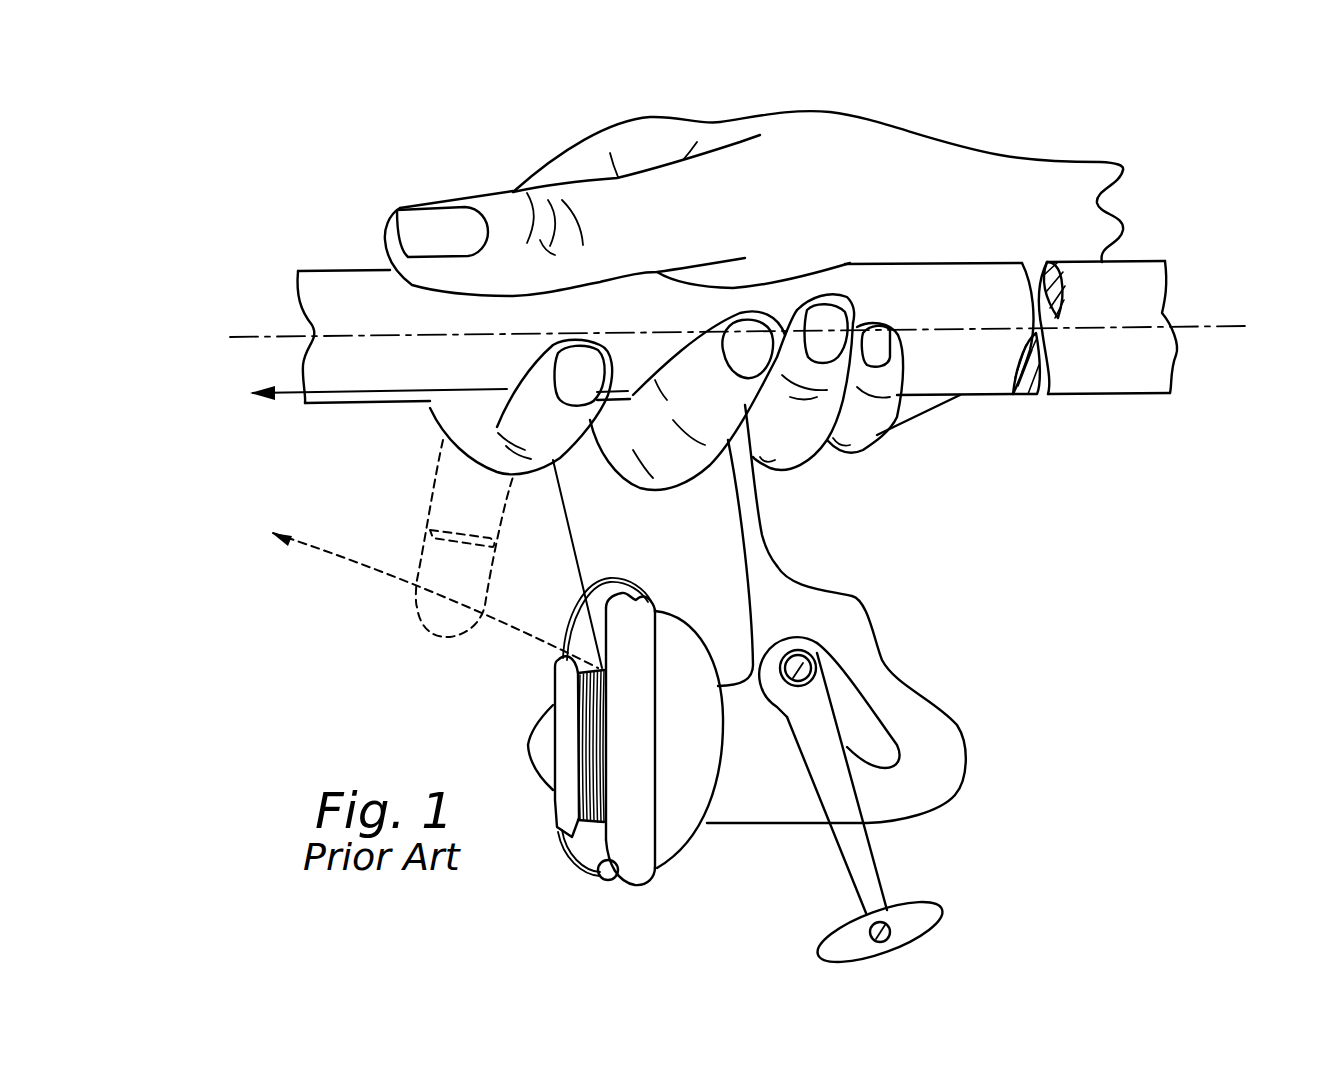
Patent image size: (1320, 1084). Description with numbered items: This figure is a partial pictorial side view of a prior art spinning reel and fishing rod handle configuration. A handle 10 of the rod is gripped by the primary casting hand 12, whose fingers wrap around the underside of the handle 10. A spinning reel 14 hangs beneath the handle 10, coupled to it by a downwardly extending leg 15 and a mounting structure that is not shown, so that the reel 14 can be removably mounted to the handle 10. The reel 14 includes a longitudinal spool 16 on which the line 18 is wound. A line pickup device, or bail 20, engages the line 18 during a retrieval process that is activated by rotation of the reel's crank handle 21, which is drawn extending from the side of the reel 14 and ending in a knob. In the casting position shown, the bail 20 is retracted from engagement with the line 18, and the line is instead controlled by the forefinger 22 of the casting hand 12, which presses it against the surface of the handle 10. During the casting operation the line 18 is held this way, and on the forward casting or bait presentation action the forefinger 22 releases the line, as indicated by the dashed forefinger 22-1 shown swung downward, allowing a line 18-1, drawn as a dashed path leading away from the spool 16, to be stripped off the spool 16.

The handle 10 is at (963, 384).
The primary casting hand 12 is at (822, 128).
The spinning reel 14 is at (924, 604).
The reel foot / stem 15 is at (753, 507).
The spool 16 is at (570, 743).
The line 18 is at (571, 527).
The line 18-1 is at (361, 562).
The bail 20 is at (613, 580).
The crank handle 21 is at (863, 857).
The forefinger 22 is at (523, 377).
The forefinger 22-1 is at (430, 500).